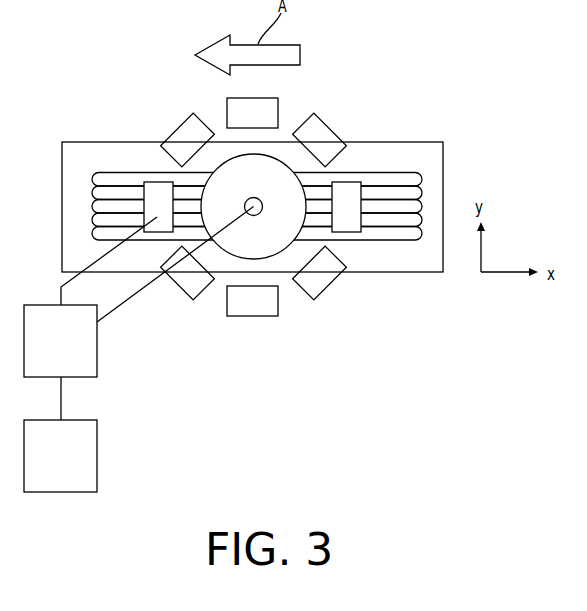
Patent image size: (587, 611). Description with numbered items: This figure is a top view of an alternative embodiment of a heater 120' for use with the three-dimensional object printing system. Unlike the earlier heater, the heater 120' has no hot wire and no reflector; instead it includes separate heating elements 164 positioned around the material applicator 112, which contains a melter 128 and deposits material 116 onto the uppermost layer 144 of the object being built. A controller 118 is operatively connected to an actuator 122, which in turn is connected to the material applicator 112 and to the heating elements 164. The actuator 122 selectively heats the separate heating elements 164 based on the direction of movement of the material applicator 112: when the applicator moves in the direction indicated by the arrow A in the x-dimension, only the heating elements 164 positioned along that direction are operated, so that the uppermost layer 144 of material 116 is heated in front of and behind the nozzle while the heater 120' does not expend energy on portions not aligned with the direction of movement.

The material applicator 112 is at (197, 179).
The material 116 is at (404, 177).
The controller 118 is at (97, 455).
The heater 120' is at (278, 116).
The actuator 122 is at (97, 340).
The melter 128 is at (252, 216).
The uppermost layer 144 is at (388, 174).
The heating elements 164 is at (255, 316).